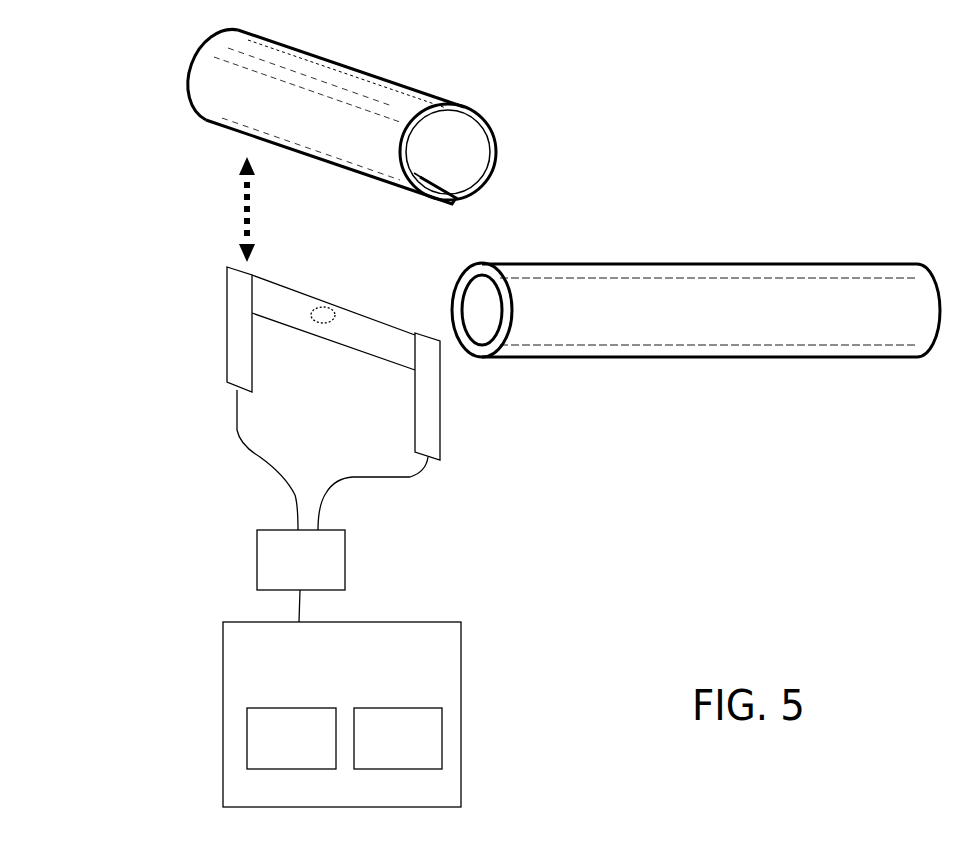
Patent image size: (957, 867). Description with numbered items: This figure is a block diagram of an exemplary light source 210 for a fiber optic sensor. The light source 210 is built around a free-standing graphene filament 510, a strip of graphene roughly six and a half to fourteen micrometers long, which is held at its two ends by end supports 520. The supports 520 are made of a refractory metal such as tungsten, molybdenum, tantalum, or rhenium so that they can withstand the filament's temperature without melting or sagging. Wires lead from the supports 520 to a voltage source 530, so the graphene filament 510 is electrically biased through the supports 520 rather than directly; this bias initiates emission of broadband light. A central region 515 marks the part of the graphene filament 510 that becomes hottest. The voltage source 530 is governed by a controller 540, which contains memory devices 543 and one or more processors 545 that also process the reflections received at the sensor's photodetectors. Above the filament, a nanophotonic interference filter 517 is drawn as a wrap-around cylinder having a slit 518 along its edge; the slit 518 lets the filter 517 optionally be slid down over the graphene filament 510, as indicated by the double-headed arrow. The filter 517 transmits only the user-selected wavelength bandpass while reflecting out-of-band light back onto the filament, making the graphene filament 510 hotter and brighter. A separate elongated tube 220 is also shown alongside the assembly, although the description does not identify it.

The light source 210 is at (131, 199).
The tube 220 is at (655, 263).
The graphene filament 510 is at (275, 282).
The region 515 is at (320, 323).
The nanophotonic interference filter 517 is at (433, 95).
The slit 518 is at (448, 187).
The end supports 520 is at (227, 355).
The voltage source 530 is at (301, 560).
The controller 540 is at (328, 686).
The memory devices 543 is at (291, 738).
The processors 545 is at (398, 738).